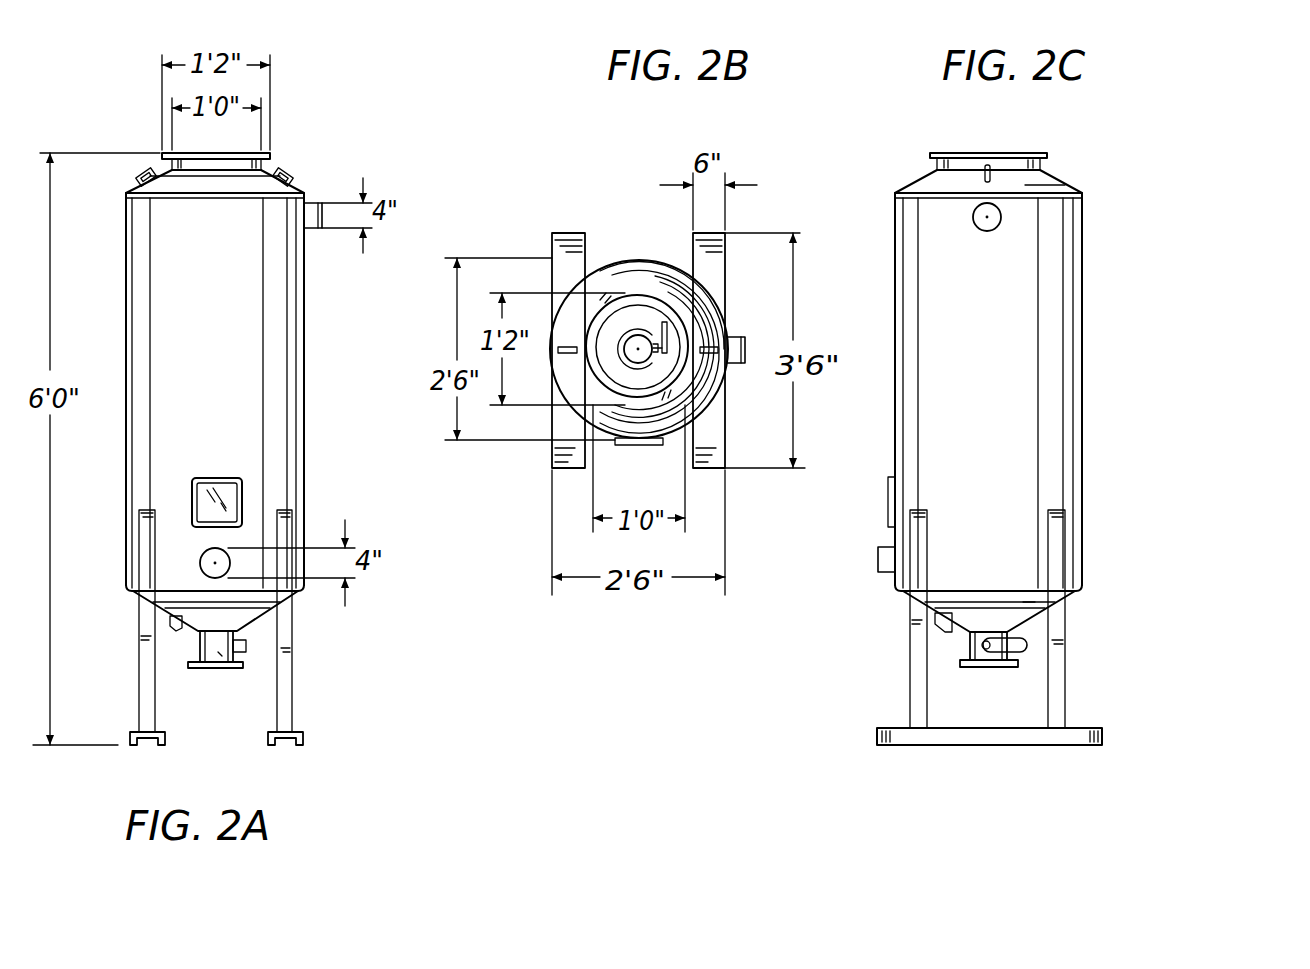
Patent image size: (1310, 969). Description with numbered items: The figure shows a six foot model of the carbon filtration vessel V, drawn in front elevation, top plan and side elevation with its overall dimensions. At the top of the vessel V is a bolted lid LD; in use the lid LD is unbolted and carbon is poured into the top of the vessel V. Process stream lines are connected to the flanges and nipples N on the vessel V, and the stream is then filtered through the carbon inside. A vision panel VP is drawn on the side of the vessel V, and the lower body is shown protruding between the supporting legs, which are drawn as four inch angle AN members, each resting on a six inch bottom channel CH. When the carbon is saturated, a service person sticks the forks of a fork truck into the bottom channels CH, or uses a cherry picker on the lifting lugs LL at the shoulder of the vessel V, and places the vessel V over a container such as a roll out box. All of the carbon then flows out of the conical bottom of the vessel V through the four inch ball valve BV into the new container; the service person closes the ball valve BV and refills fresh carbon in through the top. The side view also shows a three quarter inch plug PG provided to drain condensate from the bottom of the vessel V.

In FIG. 2A, the lid LD is at (163, 153).
In FIG. 2A, the lifting lugs LL is at (138, 176).
In FIG. 2A, the nipples N is at (319, 203).
In FIG. 2A, the vessel V is at (305, 348).
In FIG. 2A, the vision panel VP is at (228, 494).
In FIG. 2A, the angle AN is at (288, 657).
In FIG. 2A, the ball valve BV is at (222, 655).
In FIG. 2C, the ball valve BV is at (1007, 668).
In FIG. 2A, the bottom channels CH is at (302, 740).
In FIG. 2C, the plug PG is at (940, 634).